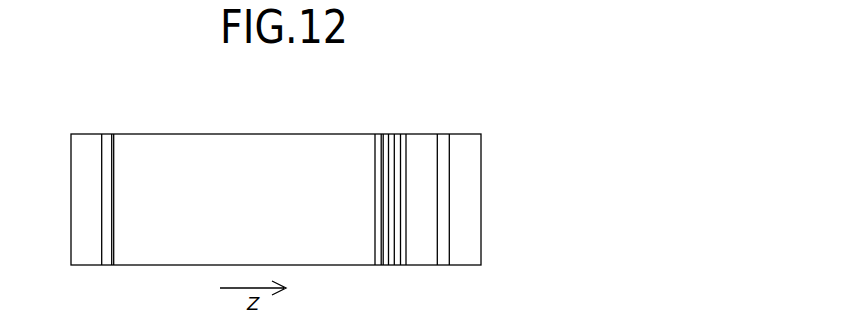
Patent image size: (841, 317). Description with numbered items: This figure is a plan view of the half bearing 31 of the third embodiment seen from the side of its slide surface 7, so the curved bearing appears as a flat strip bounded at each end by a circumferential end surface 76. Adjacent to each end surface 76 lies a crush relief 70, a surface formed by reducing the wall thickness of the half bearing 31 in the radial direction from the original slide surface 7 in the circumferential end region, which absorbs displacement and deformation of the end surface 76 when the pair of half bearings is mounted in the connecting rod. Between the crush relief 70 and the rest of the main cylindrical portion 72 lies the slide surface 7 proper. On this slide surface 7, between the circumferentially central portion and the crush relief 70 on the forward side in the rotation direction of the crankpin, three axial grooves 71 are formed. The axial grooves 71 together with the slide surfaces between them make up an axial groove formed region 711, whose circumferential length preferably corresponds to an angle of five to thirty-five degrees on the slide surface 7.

The half bearing 31 is at (260, 133).
The slide surface 7 is at (223, 153).
The crush relief 70 is at (107, 160).
The axial groove 71 is at (379, 152).
The axial groove formed region 711 is at (377, 269).
The main cylindrical portion 72 is at (180, 153).
The circumferential end surface 76 is at (85, 181).